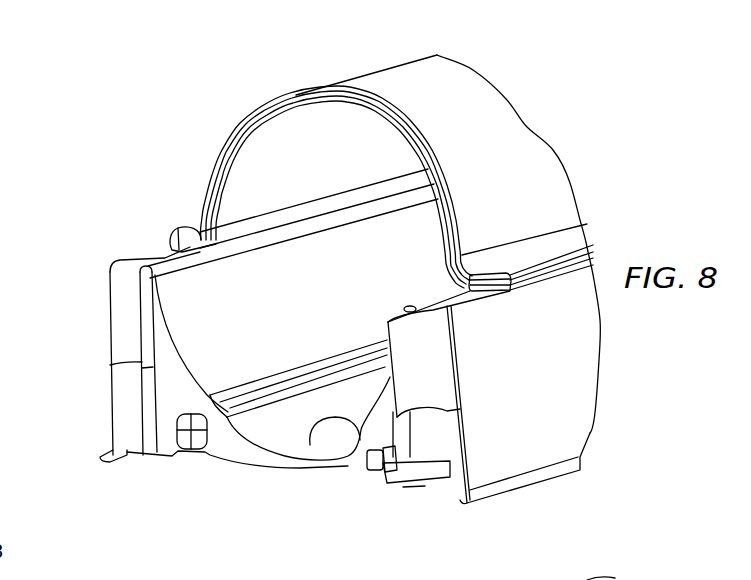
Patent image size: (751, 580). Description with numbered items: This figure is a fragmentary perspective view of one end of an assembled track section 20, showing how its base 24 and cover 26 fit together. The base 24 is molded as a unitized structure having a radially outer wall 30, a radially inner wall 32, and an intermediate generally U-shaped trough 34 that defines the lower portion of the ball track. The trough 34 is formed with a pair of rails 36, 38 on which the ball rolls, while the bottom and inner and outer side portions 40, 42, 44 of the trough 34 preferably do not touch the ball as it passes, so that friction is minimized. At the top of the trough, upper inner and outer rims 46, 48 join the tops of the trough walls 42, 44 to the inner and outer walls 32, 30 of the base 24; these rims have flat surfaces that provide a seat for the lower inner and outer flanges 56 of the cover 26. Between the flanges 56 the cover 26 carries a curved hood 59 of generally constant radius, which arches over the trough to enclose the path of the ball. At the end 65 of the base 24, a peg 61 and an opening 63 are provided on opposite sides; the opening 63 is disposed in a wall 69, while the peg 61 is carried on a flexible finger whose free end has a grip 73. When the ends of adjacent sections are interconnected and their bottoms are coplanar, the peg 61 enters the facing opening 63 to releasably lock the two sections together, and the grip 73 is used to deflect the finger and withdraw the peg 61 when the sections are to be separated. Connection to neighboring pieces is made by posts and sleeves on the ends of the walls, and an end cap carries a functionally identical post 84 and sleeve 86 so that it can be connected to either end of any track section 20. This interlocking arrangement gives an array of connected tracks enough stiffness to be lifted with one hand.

The track section 20 is at (672, 579).
The base 24 is at (612, 375).
The cover 26 is at (558, 136).
The radially outer wall 30 is at (145, 250).
The radially inner wall 32 is at (572, 438).
The U-shaped trough 34 is at (205, 329).
The rail 36 is at (256, 390).
The rail 38 is at (310, 447).
The bottom portion of trough 40 is at (245, 452).
The inner side portion of trough 42 is at (397, 397).
The outer side portion of trough 44 is at (325, 307).
The upper inner rim 46 is at (438, 309).
The upper outer rim 48 is at (167, 252).
The lower inner and outer flanges 56 is at (548, 265).
The curved hood 59 is at (500, 116).
The peg 61 is at (393, 484).
The opening 63 is at (180, 455).
The end of base 65 is at (237, 447).
The wall 69 is at (177, 406).
The grip 73 is at (545, 570).
The post 84 is at (418, 440).
The sleeve 86 is at (118, 402).